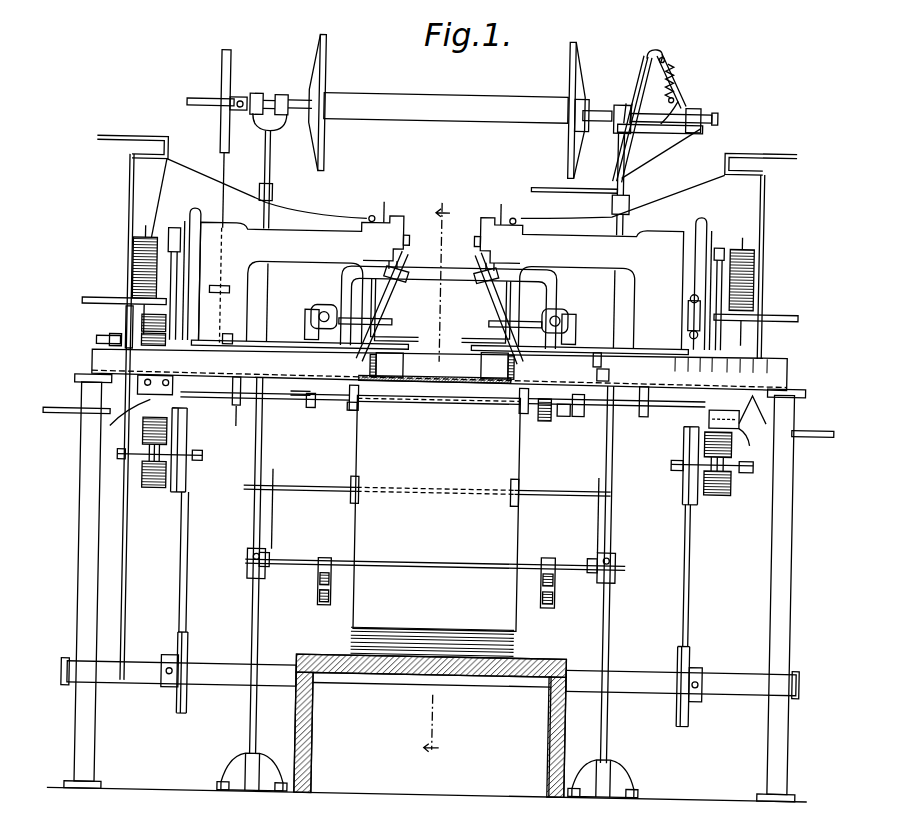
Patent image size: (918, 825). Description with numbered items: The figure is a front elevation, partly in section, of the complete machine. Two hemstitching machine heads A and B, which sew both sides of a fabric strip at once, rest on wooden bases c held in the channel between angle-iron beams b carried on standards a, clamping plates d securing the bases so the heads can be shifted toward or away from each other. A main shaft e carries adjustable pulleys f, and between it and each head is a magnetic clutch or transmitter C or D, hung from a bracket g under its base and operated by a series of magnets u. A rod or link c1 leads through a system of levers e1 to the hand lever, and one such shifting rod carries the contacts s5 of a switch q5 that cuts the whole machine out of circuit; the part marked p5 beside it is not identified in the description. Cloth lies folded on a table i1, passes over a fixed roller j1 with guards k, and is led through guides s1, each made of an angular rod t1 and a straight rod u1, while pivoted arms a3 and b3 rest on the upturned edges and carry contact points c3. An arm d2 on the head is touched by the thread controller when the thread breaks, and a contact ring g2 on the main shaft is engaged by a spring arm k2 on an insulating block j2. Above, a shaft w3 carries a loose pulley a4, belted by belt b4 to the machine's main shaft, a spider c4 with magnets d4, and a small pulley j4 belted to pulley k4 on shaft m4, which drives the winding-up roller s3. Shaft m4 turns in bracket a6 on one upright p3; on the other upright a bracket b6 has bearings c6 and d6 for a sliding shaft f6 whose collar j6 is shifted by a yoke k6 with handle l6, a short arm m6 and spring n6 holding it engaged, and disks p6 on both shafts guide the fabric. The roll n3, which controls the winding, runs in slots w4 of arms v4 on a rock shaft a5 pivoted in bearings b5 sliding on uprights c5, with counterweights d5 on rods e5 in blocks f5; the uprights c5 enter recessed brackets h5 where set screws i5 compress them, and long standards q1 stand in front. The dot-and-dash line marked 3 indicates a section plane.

The standards a is at (81, 596).
The beams b is at (430, 362).
The wooden bases or bed plates c is at (400, 378).
The rod or link c1 is at (226, 406).
The main shaft e is at (634, 670).
The table or support i1 is at (445, 666).
The roll n3 is at (350, 492).
The slotted portion w4 is at (310, 487).
The guiding arms v4 is at (298, 512).
The uprights c5 is at (256, 522).
The standards q1 is at (256, 714).
The rock shaft a5 is at (270, 560).
The adjustable bearings b5 is at (618, 570).
The blocks f5 is at (305, 574).
The counter-weights d5 is at (321, 590).
The short rods e5 is at (552, 556).
The clutch device or transmitter C is at (151, 449).
The clutch device or transmitter D is at (698, 466).
The magnets u is at (156, 493).
The belt b4 is at (129, 604).
The pulleys f is at (696, 655).
The bracket g is at (428, 417).
The clamping plates d is at (236, 420).
The contact ring g2 is at (150, 240).
The upright or standard p3 is at (265, 222).
The spring arm k2 is at (752, 288).
The insulating block j2 is at (698, 322).
The pulley k4 is at (225, 84).
The shaft m4 is at (194, 102).
The bracket a6 is at (266, 172).
The winding-up roller s3 is at (426, 96).
The circular flanges or disks p6 is at (324, 80).
The bearing c6 is at (612, 104).
The bearing d6 is at (694, 106).
The pivoted yoke k6 is at (636, 72).
The short arm m6 is at (653, 50).
The spring n6 is at (670, 72).
The collar j6 is at (668, 104).
The short shaft f6 is at (697, 129).
The bracket b6 is at (650, 160).
The operating handle l6 is at (537, 186).
The machine head A is at (301, 280).
The machine head B is at (581, 286).
The angular rod t1 is at (441, 311).
The guides s1 is at (440, 316).
The straight rod u1 is at (394, 274).
The pivoted arm a3 is at (336, 318).
The pivoted arm b3 is at (512, 325).
The system of levers e1 is at (303, 336).
The contact points c3 is at (448, 365).
The arm d2 is at (522, 370).
The recessed bracket h5 is at (596, 372).
The set screw i5 is at (596, 350).
The section line 3 is at (438, 482).
The electric magnets d4 is at (140, 330).
The loose pulley a4 is at (124, 336).
The shaft w3 is at (95, 347).
The spider c4 is at (218, 304).
The small pulley j4 is at (224, 338).
The fixed roller j1 is at (316, 410).
The guards or stops k is at (352, 412).
The block p5 is at (547, 420).
The switch q5 is at (562, 414).
The contacts s5 is at (578, 414).